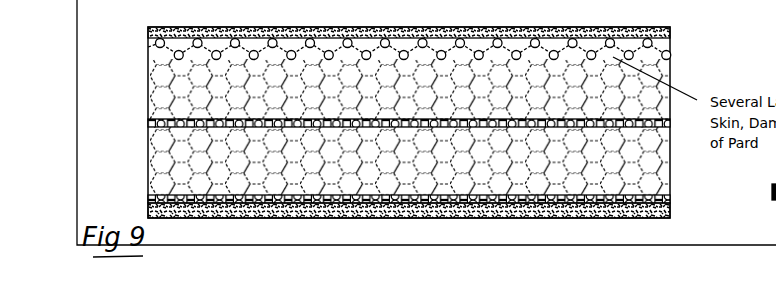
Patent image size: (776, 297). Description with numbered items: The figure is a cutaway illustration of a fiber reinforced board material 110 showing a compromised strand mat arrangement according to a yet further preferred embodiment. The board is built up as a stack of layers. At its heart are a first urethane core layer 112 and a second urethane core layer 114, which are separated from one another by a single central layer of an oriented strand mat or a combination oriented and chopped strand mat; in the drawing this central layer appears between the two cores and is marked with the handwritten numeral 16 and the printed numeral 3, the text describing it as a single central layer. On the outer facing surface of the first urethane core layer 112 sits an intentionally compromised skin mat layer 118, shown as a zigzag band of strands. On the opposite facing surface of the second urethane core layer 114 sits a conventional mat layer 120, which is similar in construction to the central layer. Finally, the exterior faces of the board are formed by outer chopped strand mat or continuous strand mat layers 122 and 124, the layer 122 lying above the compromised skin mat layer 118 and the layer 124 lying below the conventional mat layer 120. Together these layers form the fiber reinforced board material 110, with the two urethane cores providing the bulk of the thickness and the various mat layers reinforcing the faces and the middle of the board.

The fiber reinforced board material 110 is at (345, 122).
The first urethane core layer 112 is at (381, 72).
The second urethane core layer 114 is at (375, 161).
The intentionally compromised skin mat layer 118 is at (670, 42).
The conventional mat layer 120 is at (670, 198).
The outer chopped strand mat or continuous strand mat layer 122 is at (673, 27).
The outer chopped strand mat or continuous strand mat layer 124 is at (673, 218).
The intermediate layer 16 is at (343, 117).
The layer 3 is at (395, 119).